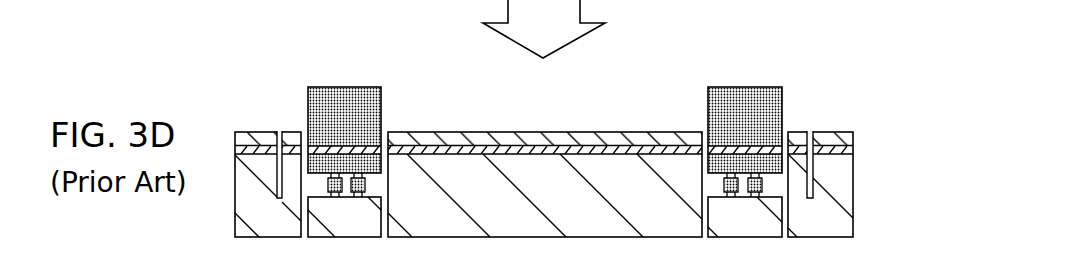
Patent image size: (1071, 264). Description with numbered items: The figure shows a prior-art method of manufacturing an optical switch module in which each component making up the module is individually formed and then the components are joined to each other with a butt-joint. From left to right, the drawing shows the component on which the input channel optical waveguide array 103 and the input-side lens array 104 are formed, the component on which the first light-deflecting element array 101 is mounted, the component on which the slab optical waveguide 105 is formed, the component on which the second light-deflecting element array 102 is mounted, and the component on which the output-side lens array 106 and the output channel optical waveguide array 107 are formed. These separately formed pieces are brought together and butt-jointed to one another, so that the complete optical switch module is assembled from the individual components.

The first light-deflecting element array 101 is at (349, 82).
The second light-deflecting element array 102 is at (744, 84).
The input channel optical waveguide array 103 is at (244, 129).
The input-side lens array 104 is at (278, 129).
The slab optical waveguide 105 is at (614, 128).
The output-side lens array 106 is at (810, 129).
The output channel optical waveguide array 107 is at (843, 129).